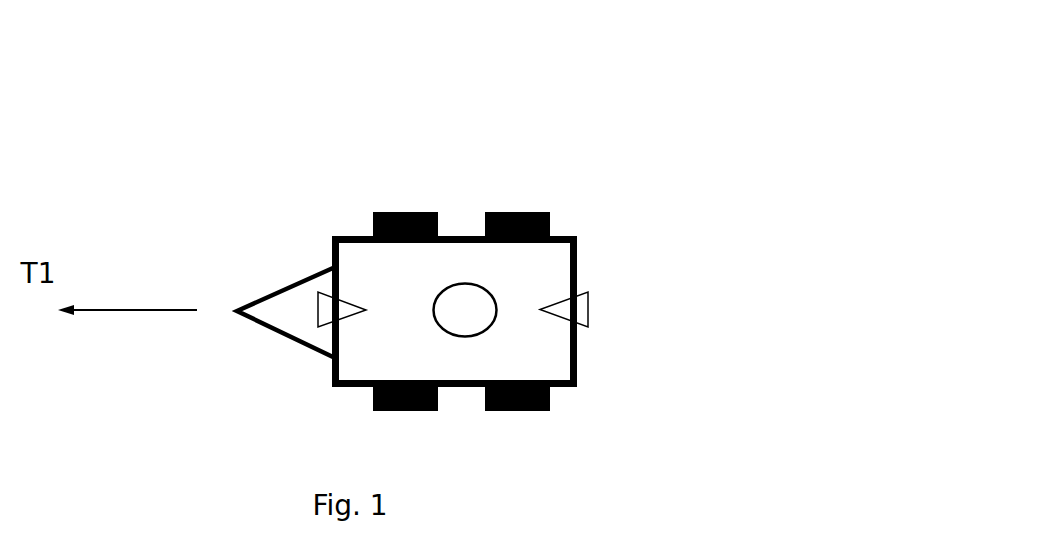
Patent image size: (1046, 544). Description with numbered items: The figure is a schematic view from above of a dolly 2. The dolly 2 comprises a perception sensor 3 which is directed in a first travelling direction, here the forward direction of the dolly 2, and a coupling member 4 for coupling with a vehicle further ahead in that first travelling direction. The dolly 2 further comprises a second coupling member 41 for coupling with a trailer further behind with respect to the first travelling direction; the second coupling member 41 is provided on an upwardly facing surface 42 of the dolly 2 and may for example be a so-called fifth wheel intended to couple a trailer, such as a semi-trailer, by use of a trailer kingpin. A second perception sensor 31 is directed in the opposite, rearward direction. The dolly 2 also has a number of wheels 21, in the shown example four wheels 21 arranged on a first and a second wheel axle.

The dolly 2 is at (491, 154).
The wheels 21 is at (406, 211).
The perception sensor 3 is at (316, 319).
The second perception sensor 31 is at (590, 301).
The coupling member 4 is at (236, 311).
The second coupling member 41 is at (465, 337).
The upwardly facing surface 42 is at (541, 354).